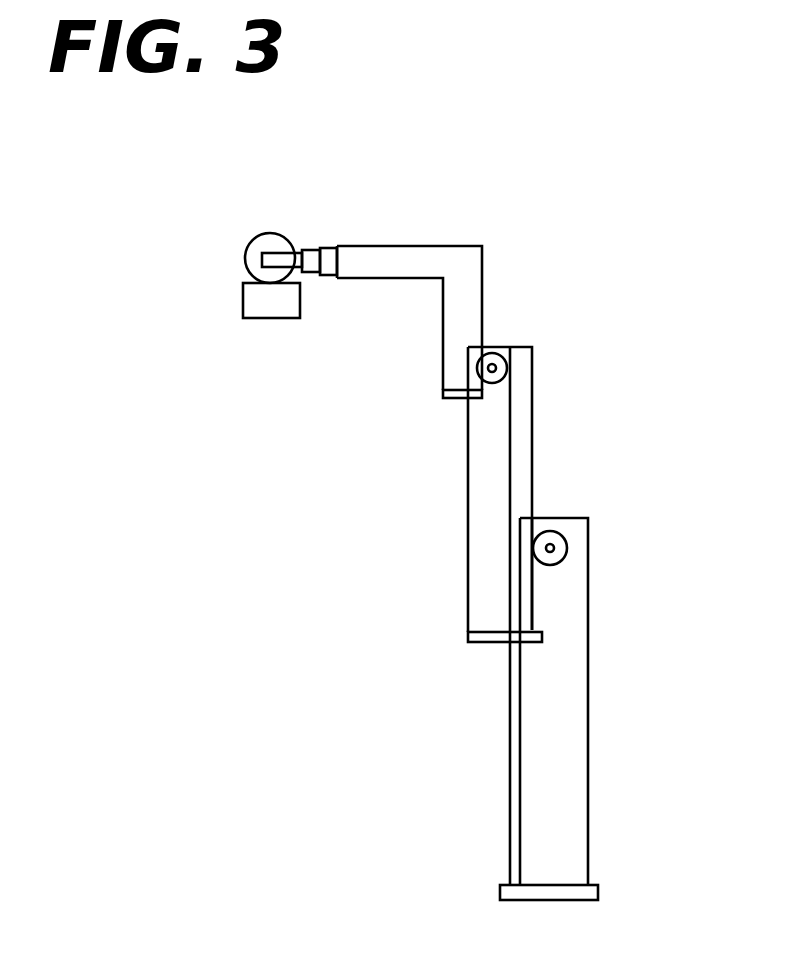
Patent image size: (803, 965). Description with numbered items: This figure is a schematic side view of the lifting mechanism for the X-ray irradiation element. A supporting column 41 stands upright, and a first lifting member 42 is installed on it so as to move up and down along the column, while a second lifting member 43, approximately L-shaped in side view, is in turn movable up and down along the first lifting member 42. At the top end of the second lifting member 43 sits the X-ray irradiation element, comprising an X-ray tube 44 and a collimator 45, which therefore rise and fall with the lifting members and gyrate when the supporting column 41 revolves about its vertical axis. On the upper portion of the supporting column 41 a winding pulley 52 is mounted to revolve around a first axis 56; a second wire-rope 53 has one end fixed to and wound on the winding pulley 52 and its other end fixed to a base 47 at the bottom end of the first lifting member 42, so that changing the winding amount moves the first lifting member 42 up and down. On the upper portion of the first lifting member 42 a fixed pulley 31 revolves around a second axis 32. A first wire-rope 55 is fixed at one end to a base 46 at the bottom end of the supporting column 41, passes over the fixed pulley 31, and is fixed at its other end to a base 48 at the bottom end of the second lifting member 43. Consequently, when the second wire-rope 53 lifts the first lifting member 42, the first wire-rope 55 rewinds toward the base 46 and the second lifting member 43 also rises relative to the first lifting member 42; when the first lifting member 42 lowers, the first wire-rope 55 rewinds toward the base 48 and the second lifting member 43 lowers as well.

The fixed pulley 31 is at (505, 361).
The second axis 32 is at (493, 365).
The supporting column 41 is at (568, 677).
The first lifting member 42 is at (486, 490).
The second lifting member 43 is at (455, 317).
The X-ray tube 44 is at (273, 242).
The collimator 45 is at (270, 308).
The base 46 is at (505, 892).
The base 47 is at (486, 635).
The base 48 is at (462, 395).
The winding pulley 52 is at (562, 547).
The second wire-rope 53 is at (535, 592).
The first wire-rope 55 is at (512, 418).
The first axis 56 is at (550, 547).